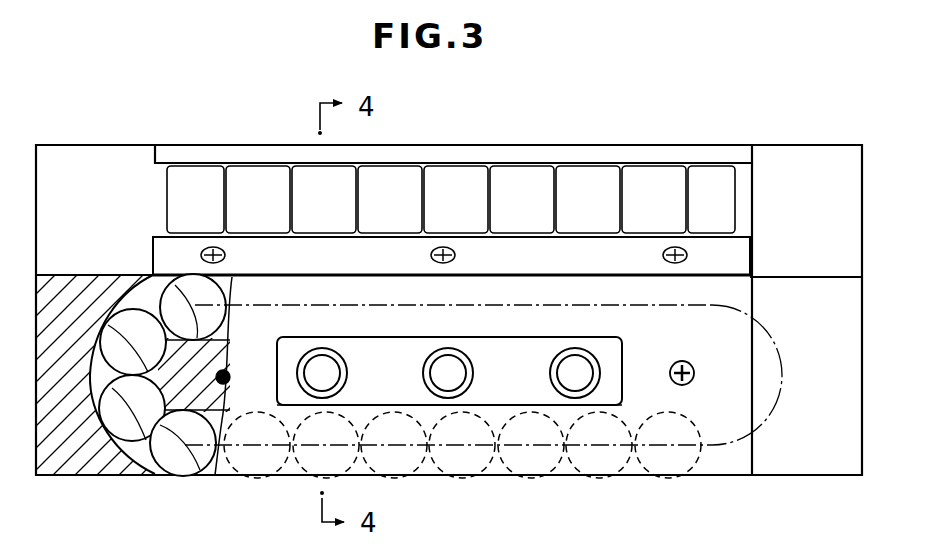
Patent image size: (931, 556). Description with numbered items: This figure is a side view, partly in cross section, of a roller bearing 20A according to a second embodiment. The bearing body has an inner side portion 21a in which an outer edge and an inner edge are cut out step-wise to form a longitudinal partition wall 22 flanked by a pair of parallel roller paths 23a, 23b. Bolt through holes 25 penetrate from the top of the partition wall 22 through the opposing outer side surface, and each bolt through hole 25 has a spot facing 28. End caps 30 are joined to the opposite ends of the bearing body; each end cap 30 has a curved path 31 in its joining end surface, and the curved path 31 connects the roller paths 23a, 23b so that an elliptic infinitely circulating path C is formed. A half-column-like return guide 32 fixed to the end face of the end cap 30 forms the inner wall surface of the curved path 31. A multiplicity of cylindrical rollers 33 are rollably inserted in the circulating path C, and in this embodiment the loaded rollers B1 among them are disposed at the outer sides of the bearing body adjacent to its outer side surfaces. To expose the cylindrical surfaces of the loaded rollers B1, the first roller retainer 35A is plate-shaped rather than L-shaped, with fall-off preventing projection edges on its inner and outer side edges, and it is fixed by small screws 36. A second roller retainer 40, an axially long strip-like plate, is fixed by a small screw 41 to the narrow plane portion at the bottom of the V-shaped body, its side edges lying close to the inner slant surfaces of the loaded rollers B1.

The roller bearing 20A is at (632, 132).
The first roller retainer 35A is at (728, 152).
The second roller retainer 40 is at (745, 262).
The small screw 41 is at (687, 256).
The partition wall 22 is at (74, 326).
The roller path 23a is at (180, 278).
The roller path 23b is at (194, 477).
The spot facing 28 is at (306, 362).
The bolt through hole 25 is at (330, 366).
The small screw 36 is at (694, 378).
The inner side portion 21a is at (523, 385).
The loaded roller B1 is at (403, 478).
The infinitely circulating path C is at (727, 446).
The end cap 30 is at (67, 460).
The curved path 31 is at (83, 455).
The return guide 32 is at (158, 477).
The cylindrical roller 33 is at (120, 476).